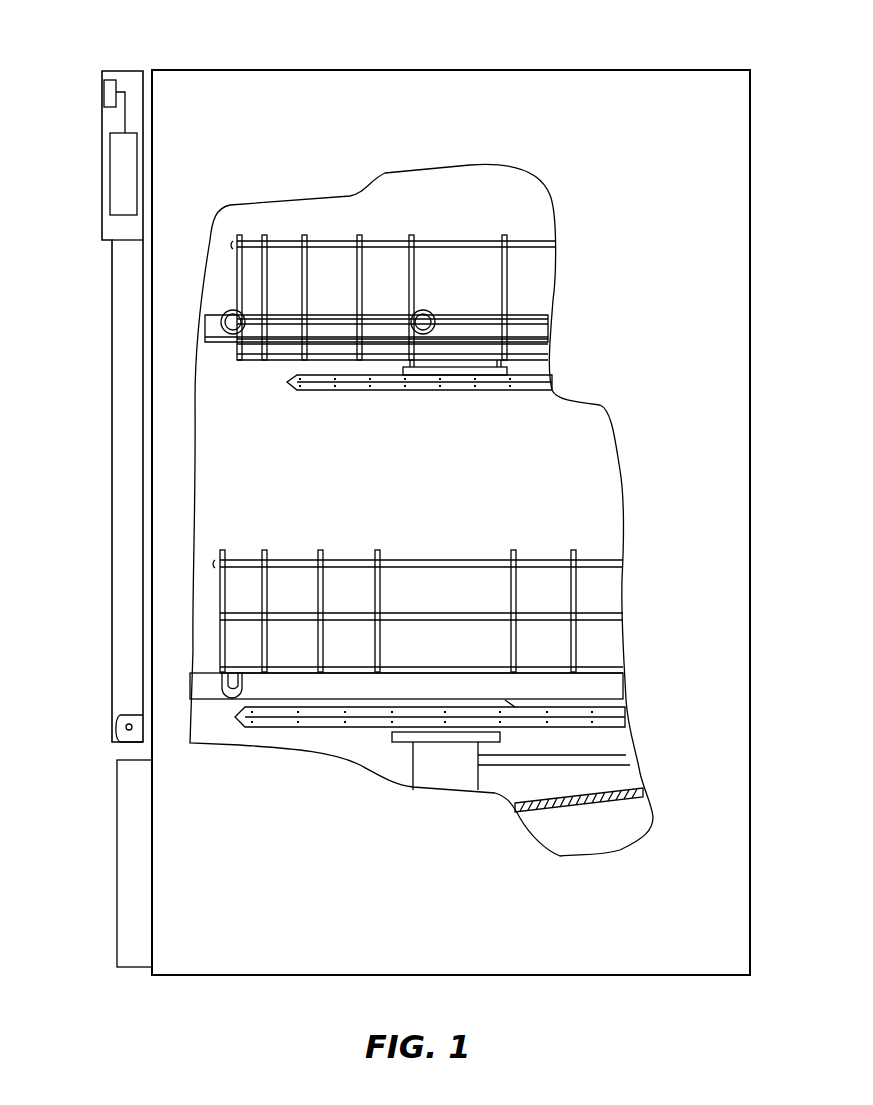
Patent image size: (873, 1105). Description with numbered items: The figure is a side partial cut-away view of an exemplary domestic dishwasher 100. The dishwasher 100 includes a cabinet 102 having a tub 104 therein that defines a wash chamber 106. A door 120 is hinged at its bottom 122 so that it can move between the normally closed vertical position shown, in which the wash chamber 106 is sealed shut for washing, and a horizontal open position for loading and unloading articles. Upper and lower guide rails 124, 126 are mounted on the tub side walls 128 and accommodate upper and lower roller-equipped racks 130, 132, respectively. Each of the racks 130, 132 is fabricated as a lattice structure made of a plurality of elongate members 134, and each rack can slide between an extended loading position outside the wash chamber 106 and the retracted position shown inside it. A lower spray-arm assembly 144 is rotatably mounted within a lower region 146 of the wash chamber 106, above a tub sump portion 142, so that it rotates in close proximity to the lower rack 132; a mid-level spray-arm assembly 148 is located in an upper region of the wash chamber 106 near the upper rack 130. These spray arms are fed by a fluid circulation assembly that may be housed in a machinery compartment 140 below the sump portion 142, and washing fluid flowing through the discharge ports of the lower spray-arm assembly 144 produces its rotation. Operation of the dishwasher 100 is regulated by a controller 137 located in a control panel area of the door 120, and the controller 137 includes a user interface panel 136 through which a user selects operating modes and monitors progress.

The dishwasher 100 is at (640, 48).
The cabinet 102 is at (700, 182).
The tub 104 is at (230, 487).
The wash chamber 106 is at (231, 518).
The door 120 is at (110, 703).
The bottom of door 122 is at (112, 745).
The upper guide rail 124 is at (220, 345).
The lower guide rail 126 is at (203, 702).
The tub side walls 128 is at (293, 210).
The upper rack 130 is at (371, 236).
The lower rack 132 is at (401, 549).
The elongate members 134 is at (270, 380).
The user interface panel 136 is at (104, 94).
The controller 137 is at (118, 180).
The machinery compartment 140 is at (608, 843).
The tub sump portion 142 is at (613, 800).
The lower spray-arm assembly 144 is at (313, 730).
The lower region of wash chamber 146 is at (603, 686).
The mid-level spray-arm assembly 148 is at (392, 407).